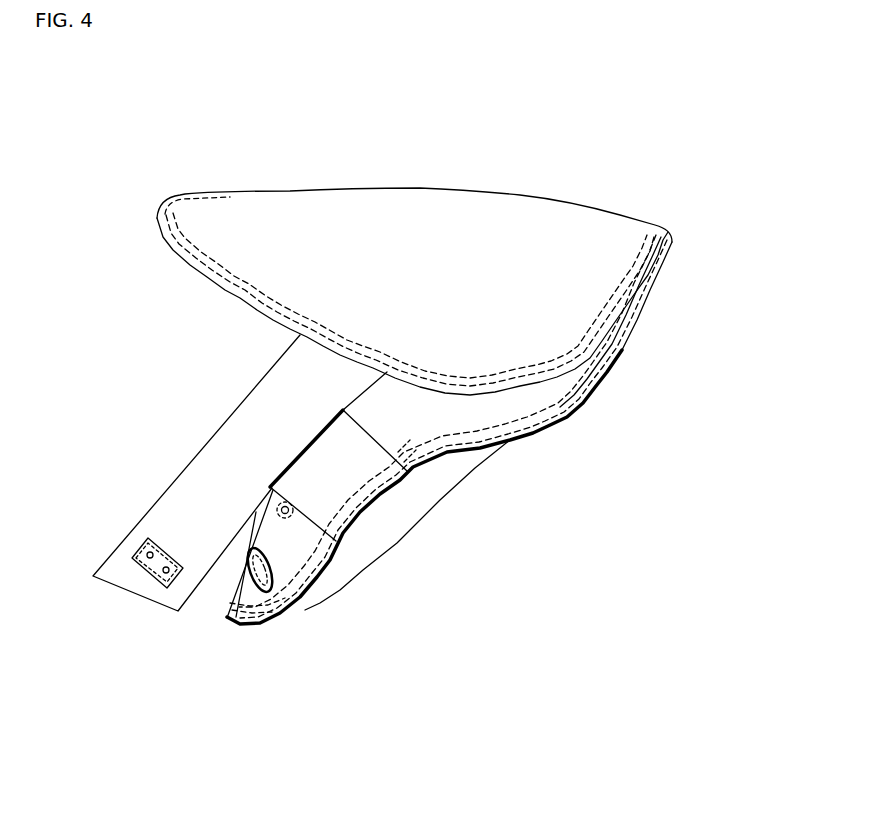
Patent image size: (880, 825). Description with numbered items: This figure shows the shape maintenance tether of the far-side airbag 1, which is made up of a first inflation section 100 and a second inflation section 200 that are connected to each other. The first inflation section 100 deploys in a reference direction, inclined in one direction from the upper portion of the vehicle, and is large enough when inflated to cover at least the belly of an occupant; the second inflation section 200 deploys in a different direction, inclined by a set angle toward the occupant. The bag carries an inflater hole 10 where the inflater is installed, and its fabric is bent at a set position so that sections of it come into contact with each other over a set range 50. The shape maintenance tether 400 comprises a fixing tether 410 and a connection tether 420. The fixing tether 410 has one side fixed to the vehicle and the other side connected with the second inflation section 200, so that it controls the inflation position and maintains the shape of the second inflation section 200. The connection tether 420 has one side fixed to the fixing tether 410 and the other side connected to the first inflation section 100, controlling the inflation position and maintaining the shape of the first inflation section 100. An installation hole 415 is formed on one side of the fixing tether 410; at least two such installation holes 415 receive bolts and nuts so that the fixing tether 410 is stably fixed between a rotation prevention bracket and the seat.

The far-side airbag 1 is at (222, 66).
The inflater hole 10 is at (378, 589).
The set range 50 is at (500, 426).
The first inflation section 100 is at (424, 487).
The second inflation section 200 is at (450, 217).
The shape maintenance tether 400 is at (234, 506).
The fixing tether 410 is at (236, 506).
The installation hole 415 is at (134, 607).
The connection tether 420 is at (113, 410).